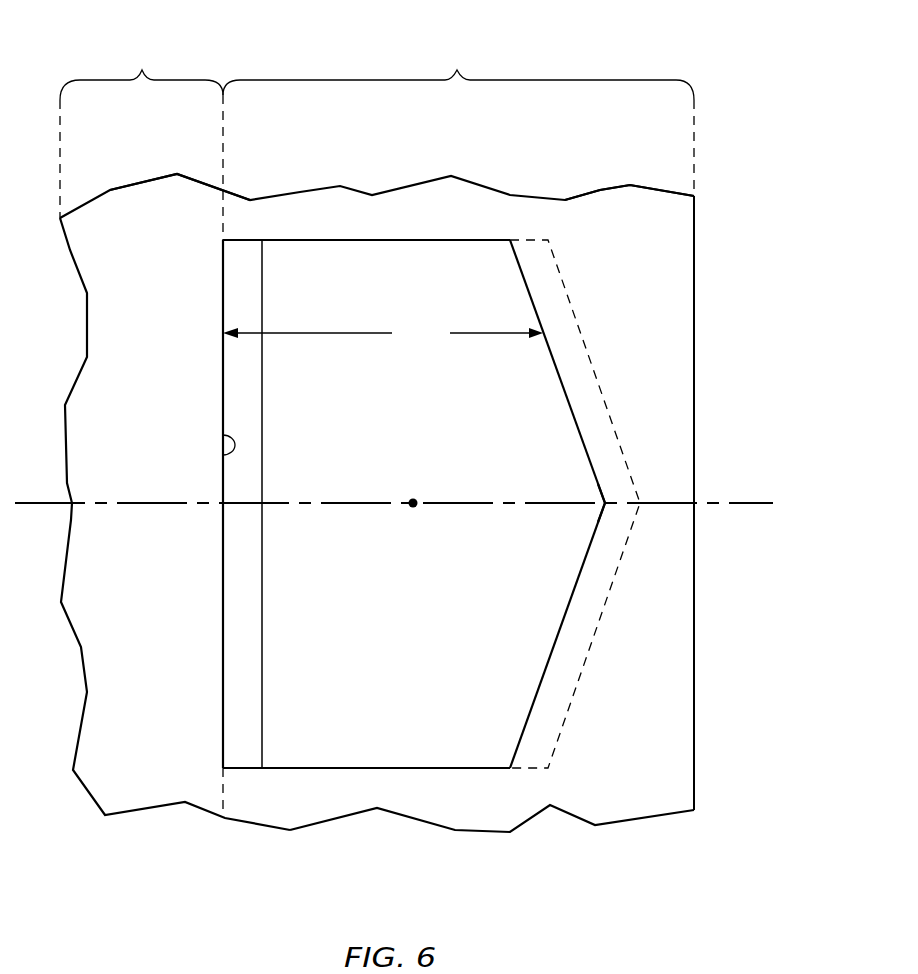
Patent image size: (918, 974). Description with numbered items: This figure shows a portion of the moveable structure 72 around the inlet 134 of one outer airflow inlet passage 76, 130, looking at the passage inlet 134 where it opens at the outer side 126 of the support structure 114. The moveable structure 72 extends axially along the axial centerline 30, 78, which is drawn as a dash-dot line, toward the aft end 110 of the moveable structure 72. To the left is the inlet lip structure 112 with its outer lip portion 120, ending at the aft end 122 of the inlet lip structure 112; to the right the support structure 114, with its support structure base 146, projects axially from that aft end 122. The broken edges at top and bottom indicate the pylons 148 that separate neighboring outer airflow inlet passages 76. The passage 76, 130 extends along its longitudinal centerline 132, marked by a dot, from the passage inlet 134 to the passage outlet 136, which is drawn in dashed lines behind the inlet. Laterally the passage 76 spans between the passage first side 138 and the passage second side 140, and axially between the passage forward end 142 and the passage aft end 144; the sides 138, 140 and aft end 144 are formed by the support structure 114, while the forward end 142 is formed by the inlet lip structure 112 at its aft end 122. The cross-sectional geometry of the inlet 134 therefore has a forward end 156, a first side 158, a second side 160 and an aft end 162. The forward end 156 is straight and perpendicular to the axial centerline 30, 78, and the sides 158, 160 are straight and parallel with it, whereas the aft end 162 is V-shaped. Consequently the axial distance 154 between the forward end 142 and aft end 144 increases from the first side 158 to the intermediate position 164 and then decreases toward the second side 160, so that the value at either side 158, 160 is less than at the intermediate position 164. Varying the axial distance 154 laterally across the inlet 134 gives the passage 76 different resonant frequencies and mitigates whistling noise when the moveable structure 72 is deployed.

The axial centerline 30 is at (407, 553).
The axial centerline 78 is at (761, 505).
The moveable structure 72 is at (720, 77).
The outer airflow inlet passage 76 is at (390, 415).
The aft end of the moveable structure 110 is at (694, 326).
The inlet lip structure 112 is at (175, 434).
The support structure 114 is at (458, 139).
The outer lip portion 120 is at (165, 176).
The aft end of the inlet lip structure 122 is at (223, 783).
The outer side of the support structure 126 is at (627, 200).
The seal body 130 is at (345, 431).
The longitudinal centerline 132 is at (413, 507).
The passage inlet 134 is at (477, 236).
The passage outlet 136 is at (584, 309).
The passage first side 138 is at (366, 719).
The passage second side 140 is at (331, 278).
The passage forward end 142 is at (223, 567).
The passage aft end 144 is at (555, 615).
The support structure base 146 is at (702, 652).
The pylon 148 is at (376, 188).
The axial distance 154 is at (383, 334).
The forward end 156 is at (223, 455).
The first side 158 is at (380, 768).
The second side 160 is at (368, 245).
The aft end 162 is at (554, 442).
The intermediate position 164 is at (605, 503).